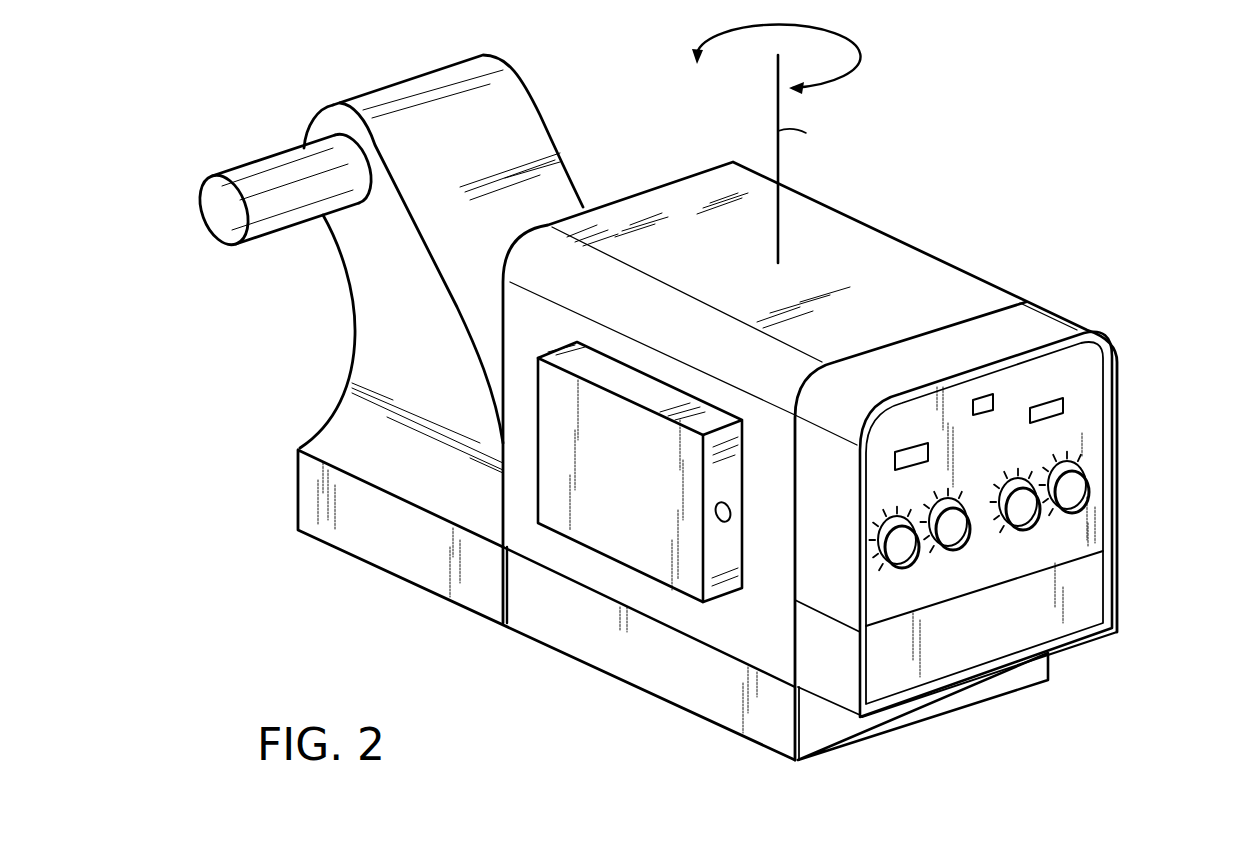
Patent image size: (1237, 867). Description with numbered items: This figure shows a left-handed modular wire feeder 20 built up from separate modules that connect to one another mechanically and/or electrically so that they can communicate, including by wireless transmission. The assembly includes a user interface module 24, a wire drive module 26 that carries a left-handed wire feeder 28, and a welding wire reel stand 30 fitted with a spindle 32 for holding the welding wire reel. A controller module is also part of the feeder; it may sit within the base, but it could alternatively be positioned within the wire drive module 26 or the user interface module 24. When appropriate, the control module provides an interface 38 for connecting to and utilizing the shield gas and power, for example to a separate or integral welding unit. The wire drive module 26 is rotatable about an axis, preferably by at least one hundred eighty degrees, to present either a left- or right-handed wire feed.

The modular wire feeder 20 is at (1070, 132).
The user interface module 24 is at (1092, 393).
The wire drive module 26 is at (970, 292).
The left-handed wire feeder 28 is at (628, 518).
The welding wire reel stand 30 is at (515, 100).
The spindle 32 is at (243, 180).
The interface 38 is at (923, 708).